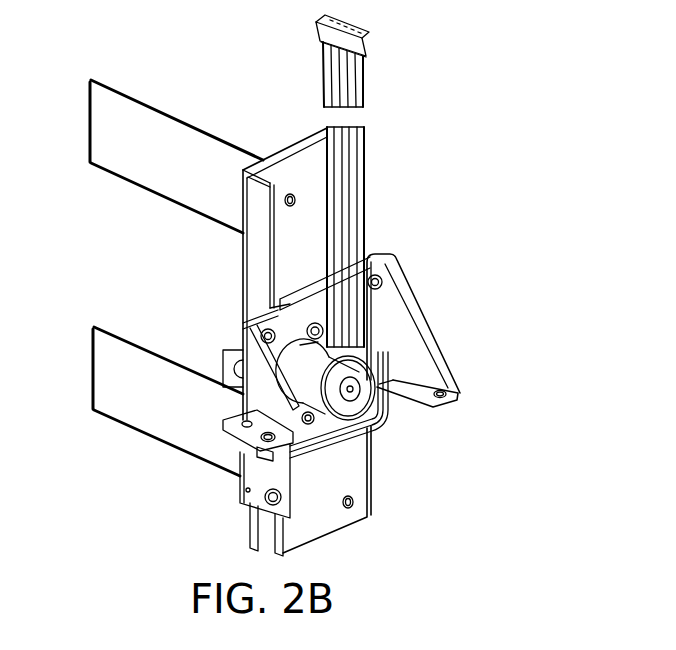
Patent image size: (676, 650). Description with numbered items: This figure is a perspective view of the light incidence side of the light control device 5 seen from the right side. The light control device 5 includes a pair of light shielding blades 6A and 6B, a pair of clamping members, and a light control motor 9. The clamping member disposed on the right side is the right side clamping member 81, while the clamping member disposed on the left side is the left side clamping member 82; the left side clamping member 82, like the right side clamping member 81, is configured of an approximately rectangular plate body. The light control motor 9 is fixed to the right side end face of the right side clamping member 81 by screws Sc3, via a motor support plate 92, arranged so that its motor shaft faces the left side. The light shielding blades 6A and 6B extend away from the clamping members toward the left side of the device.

The light control device 5 is at (466, 47).
The light shielding blade 6A is at (180, 145).
The light shielding blade 6B is at (160, 428).
The right side clamping member 81 is at (307, 210).
The left side clamping member 82 is at (243, 257).
The motor support plate 92 is at (378, 330).
The light control motor 9 is at (356, 383).
The screws Sc3 is at (261, 333).